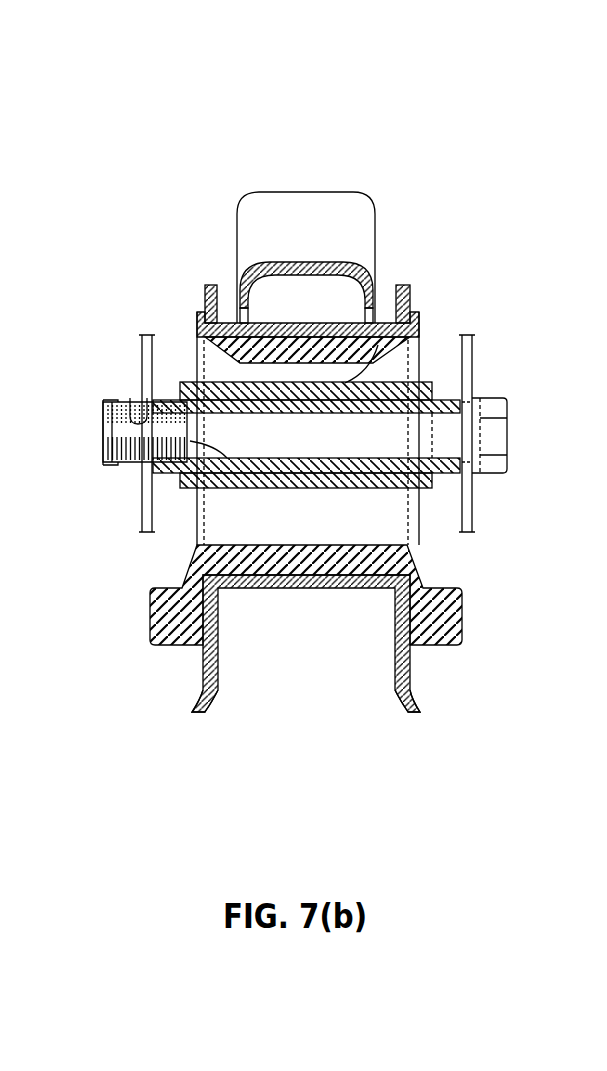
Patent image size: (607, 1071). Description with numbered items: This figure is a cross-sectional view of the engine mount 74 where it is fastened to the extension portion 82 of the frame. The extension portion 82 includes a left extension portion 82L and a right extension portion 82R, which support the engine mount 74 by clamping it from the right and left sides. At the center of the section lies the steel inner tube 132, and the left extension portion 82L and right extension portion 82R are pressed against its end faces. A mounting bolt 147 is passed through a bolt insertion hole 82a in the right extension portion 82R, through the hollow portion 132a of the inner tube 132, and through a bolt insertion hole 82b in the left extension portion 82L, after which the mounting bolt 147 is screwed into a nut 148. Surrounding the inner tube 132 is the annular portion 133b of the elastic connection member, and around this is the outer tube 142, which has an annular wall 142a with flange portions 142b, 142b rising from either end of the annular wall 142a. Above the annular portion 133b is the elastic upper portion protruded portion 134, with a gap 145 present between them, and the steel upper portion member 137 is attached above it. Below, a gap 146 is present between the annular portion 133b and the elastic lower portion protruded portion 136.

The engine mount 74 is at (214, 190).
The upper portion member 137 is at (307, 194).
The outer tube 142 is at (405, 275).
The annular portion 133b is at (235, 382).
The upper portion protruded portion 134 is at (421, 348).
The gap 145 is at (374, 372).
The gap 146 is at (387, 520).
The inner tube 132 is at (268, 474).
The hollow portion 132a is at (107, 442).
The nut 148 is at (140, 478).
The mounting bolt 147 is at (495, 435).
The lower portion protruded portion 136 is at (417, 546).
The annular wall 142a is at (325, 590).
The flange portions 142b is at (218, 658).
The extension portion 82 is at (140, 345).
The left extension portion 82L is at (140, 522).
The right extension portion 82R is at (477, 506).
The bolt insertion hole 82a is at (482, 426).
The bolt insertion hole 82b is at (130, 392).